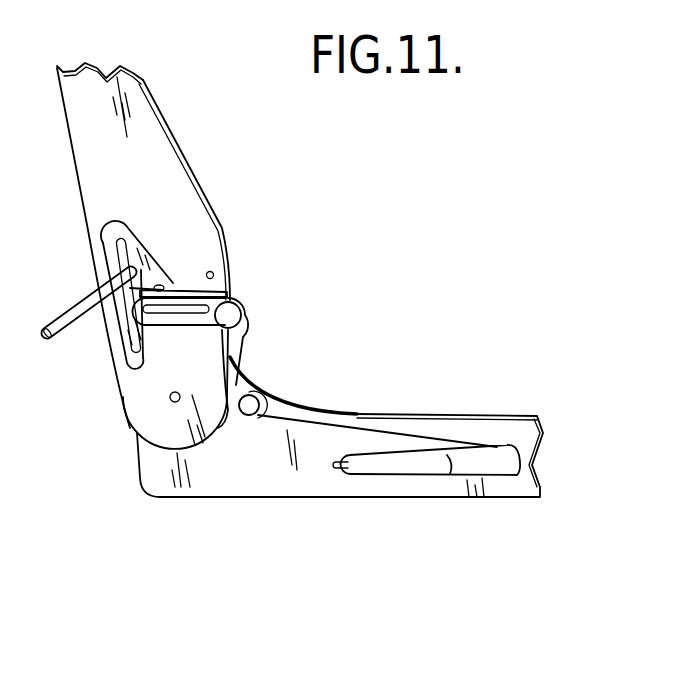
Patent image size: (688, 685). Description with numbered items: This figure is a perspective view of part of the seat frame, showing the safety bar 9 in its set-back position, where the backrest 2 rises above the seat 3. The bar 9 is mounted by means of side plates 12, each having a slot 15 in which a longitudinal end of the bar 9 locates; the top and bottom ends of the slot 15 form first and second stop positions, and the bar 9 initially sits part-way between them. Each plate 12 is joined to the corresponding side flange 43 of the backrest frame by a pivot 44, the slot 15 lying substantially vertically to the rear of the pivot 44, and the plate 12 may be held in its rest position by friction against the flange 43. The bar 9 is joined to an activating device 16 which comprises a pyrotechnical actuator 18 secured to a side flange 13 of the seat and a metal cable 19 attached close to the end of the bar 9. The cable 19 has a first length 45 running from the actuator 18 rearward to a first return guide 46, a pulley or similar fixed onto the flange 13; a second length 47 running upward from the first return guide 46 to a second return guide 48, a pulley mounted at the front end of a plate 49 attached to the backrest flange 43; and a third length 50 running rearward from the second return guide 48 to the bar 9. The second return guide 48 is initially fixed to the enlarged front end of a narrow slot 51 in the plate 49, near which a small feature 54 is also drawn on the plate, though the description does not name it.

The backrest 2 is at (150, 86).
The side flange 43 is at (146, 122).
The side plate 12 is at (108, 250).
The slot 15 is at (130, 350).
The safety bar 9 is at (68, 317).
The third length 50 is at (205, 292).
The narrow slot 51 is at (187, 313).
The plate 49 is at (243, 295).
The hole 54 is at (210, 290).
The pivot 44 is at (165, 287).
The second return guide 48 is at (233, 318).
The second length 47 is at (245, 343).
The first return guide 46 is at (250, 407).
The seat 3 is at (481, 413).
The side flange 13 is at (505, 427).
The metal cable 19 is at (352, 426).
The first length 45 is at (400, 433).
The activating device 16 is at (358, 481).
The pyrotechnical actuator 18 is at (425, 467).